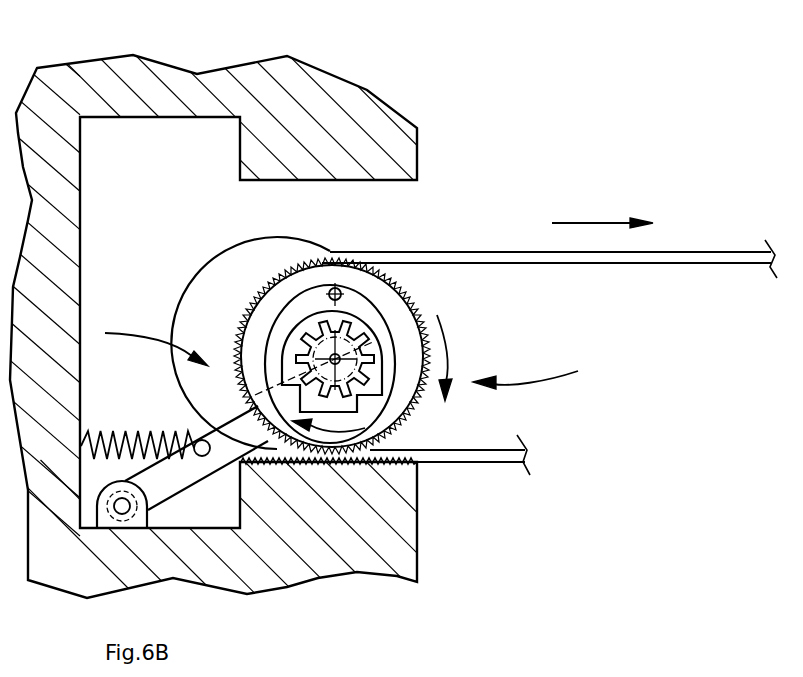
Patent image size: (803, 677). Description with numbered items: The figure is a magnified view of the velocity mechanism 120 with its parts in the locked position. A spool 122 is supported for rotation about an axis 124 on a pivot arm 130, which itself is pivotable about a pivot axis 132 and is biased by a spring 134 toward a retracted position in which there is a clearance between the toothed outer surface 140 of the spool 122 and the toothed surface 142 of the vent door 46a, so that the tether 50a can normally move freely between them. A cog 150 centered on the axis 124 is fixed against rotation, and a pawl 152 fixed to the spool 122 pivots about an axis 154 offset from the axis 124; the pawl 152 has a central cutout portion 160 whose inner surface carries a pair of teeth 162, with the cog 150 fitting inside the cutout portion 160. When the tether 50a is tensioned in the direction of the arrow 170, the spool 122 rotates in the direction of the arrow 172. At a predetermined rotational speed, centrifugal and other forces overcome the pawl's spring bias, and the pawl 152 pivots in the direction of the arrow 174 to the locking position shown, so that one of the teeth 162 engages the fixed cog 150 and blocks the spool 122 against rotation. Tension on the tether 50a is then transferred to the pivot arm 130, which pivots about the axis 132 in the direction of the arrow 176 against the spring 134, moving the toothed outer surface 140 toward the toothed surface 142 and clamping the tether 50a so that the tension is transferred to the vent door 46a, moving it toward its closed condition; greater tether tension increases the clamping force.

The vent door 46a is at (107, 85).
The tether 50a is at (663, 263).
The velocity mechanism 120 is at (549, 372).
The spool 122 is at (397, 315).
The axis 124 is at (300, 326).
The pivot arm 130 is at (223, 432).
The pivot axis 132 is at (130, 506).
The spring 134 is at (134, 437).
The toothed outer surface 140 is at (395, 423).
The toothed surface 142 is at (417, 452).
The cog 150 is at (334, 357).
The pawl 152 is at (275, 340).
The axis 154 is at (333, 288).
The central cutout portion 160 is at (282, 362).
The teeth 162 is at (390, 405).
The arrow 170 is at (585, 223).
The arrow 172 is at (448, 343).
The arrow 174 is at (335, 432).
The arrow 176 is at (127, 332).